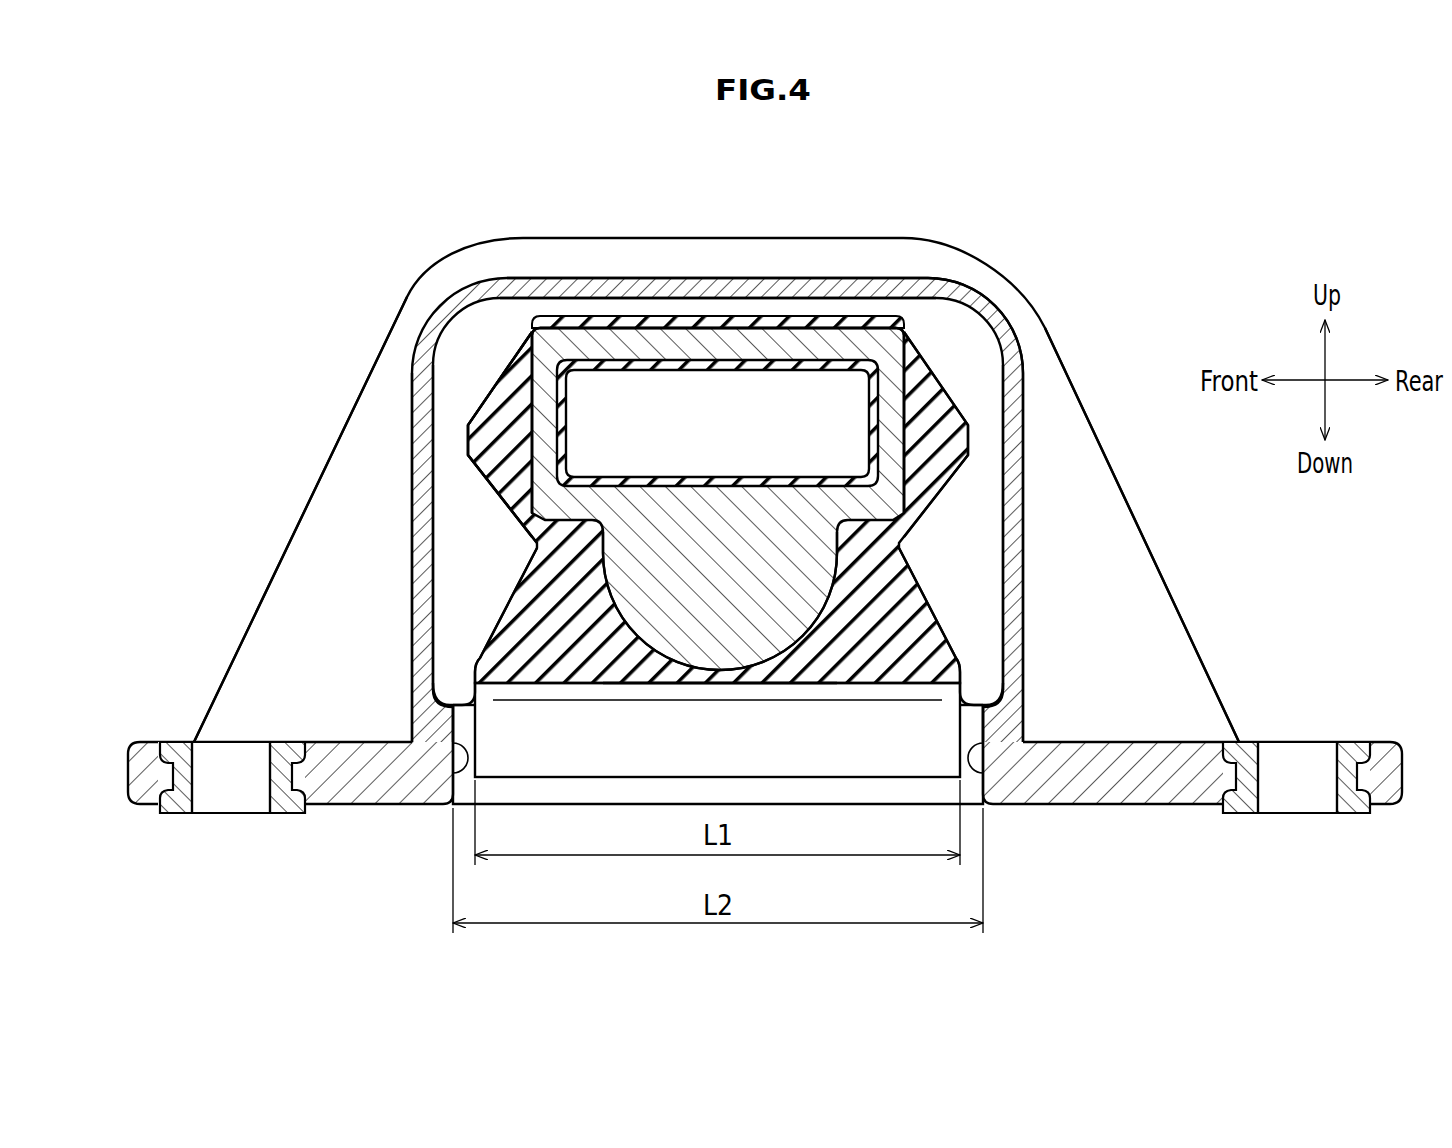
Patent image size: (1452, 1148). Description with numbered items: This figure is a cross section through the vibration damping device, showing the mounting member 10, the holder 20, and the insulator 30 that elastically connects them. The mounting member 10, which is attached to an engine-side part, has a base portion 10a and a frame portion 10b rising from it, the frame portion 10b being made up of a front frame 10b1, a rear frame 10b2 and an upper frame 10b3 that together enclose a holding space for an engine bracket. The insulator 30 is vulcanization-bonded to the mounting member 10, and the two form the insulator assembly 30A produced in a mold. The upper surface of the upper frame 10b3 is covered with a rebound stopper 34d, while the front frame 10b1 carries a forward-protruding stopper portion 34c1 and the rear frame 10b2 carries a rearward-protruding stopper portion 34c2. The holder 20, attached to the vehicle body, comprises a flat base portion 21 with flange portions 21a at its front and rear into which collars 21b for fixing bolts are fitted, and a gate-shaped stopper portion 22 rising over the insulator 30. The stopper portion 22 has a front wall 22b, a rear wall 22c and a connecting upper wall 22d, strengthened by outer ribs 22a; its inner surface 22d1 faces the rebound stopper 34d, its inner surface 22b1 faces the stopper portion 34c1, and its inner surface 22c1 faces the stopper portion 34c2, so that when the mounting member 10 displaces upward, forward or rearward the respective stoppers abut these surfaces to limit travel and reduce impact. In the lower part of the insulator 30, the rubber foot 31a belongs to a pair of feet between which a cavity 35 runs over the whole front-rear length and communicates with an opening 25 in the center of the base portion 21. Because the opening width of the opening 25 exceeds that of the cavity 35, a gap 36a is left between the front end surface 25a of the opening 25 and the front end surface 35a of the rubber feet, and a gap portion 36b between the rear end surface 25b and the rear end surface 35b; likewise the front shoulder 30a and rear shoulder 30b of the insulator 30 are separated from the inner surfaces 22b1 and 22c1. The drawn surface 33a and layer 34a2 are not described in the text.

The mounting member 10 is at (530, 456).
The base portion 10a is at (703, 598).
The frame portion 10b is at (940, 320).
The front frame 10b1 is at (523, 312).
The rear frame 10b2 is at (893, 433).
The upper frame 10b3 is at (693, 345).
The holder 20 is at (765, 552).
The base portion 21 is at (1128, 790).
The flange portions 21a is at (226, 696).
The collars 21b is at (175, 814).
The stopper portion 22 is at (1020, 345).
The outer ribs 22a is at (1017, 292).
The front wall 22b is at (425, 490).
The inner surface of front wall 22b1 is at (440, 522).
The rear wall 22c is at (1013, 488).
The inner surface of rear wall 22c1 is at (1022, 535).
The upper wall 22d is at (918, 290).
The inner surface of upper wall 22d1 is at (812, 300).
The opening 25 is at (906, 810).
The front end surface 25a is at (458, 790).
The rear end surface 25b is at (985, 785).
The insulator 30 is at (937, 603).
The insulator assembly 30A is at (500, 345).
The front shoulder 30a is at (475, 658).
The rear shoulder 30b is at (962, 658).
The left rubber foot 31a is at (830, 660).
The bonding surface 33a is at (608, 733).
The inner rubber lining 34a2 is at (872, 468).
The stopper portion 34c1 is at (463, 392).
The stopper portion 34c2 is at (965, 335).
The rebound stopper 34d is at (566, 312).
The cavity 35 is at (558, 735).
The front end surface 35a is at (455, 722).
The rear end surface 35b is at (982, 722).
The gap 36a is at (460, 692).
The gap portion 36b is at (976, 692).